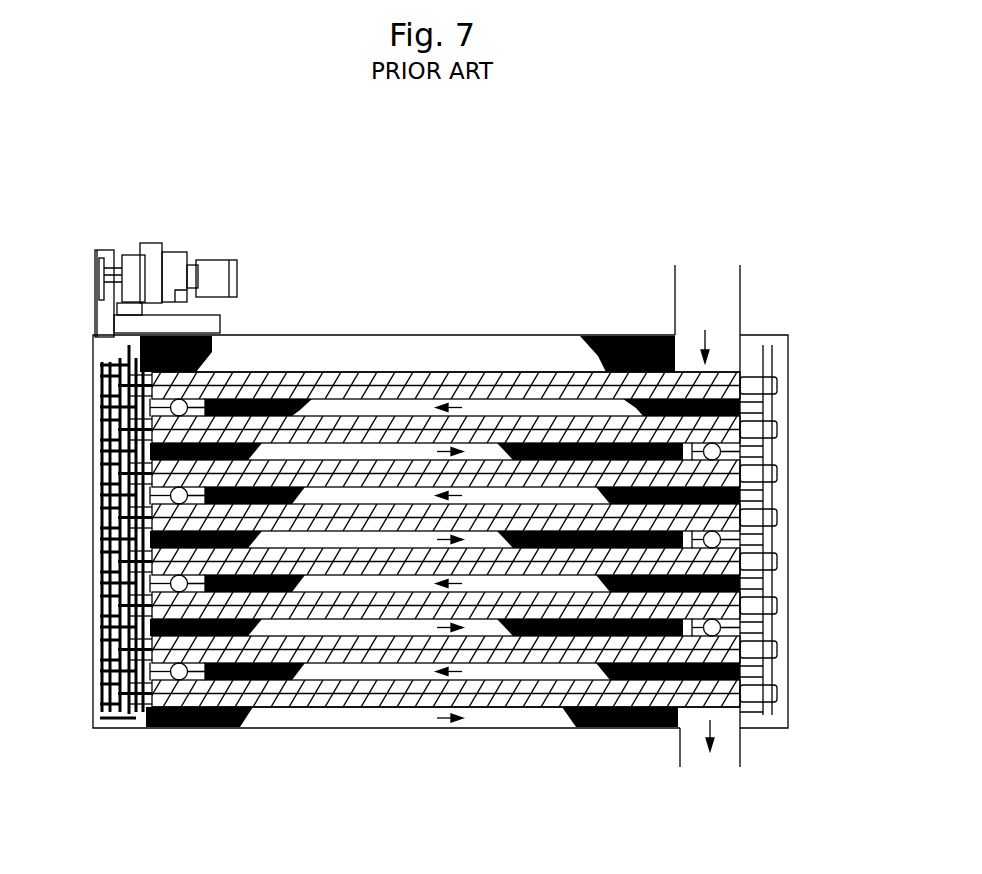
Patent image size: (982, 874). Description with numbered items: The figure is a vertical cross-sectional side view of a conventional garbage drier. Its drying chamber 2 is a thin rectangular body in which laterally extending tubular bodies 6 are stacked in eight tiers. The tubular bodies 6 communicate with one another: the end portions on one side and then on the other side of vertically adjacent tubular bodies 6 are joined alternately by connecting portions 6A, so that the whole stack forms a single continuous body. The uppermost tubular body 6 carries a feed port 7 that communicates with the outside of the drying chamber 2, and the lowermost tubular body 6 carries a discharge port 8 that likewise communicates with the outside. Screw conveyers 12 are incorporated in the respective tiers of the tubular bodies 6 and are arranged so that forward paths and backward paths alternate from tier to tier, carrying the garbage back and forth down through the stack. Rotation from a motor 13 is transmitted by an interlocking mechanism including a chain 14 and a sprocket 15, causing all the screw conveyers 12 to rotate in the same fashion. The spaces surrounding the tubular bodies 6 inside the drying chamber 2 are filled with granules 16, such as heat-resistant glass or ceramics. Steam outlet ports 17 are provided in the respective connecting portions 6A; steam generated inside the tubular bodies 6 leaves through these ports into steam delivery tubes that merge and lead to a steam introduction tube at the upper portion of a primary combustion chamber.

The drying chamber 2 is at (578, 335).
The tubular bodies 6 is at (394, 372).
The connecting portions 6A is at (152, 400).
The feed port 7 is at (718, 290).
The discharge port 8 is at (723, 733).
The screw conveyers 12 is at (312, 372).
The motor 13 is at (172, 246).
The chain 14 is at (95, 302).
The sprocket 15 is at (100, 368).
The granules 16 is at (226, 730).
The steam outlet ports 17 is at (150, 497).